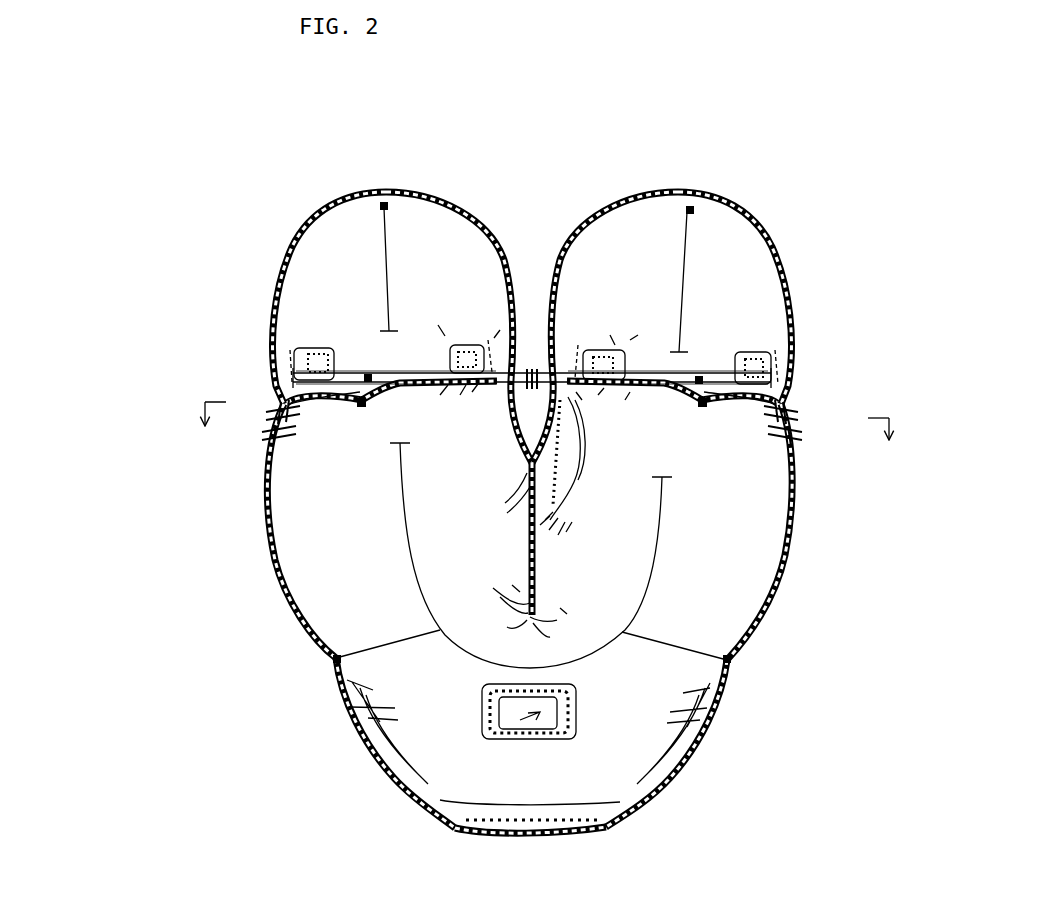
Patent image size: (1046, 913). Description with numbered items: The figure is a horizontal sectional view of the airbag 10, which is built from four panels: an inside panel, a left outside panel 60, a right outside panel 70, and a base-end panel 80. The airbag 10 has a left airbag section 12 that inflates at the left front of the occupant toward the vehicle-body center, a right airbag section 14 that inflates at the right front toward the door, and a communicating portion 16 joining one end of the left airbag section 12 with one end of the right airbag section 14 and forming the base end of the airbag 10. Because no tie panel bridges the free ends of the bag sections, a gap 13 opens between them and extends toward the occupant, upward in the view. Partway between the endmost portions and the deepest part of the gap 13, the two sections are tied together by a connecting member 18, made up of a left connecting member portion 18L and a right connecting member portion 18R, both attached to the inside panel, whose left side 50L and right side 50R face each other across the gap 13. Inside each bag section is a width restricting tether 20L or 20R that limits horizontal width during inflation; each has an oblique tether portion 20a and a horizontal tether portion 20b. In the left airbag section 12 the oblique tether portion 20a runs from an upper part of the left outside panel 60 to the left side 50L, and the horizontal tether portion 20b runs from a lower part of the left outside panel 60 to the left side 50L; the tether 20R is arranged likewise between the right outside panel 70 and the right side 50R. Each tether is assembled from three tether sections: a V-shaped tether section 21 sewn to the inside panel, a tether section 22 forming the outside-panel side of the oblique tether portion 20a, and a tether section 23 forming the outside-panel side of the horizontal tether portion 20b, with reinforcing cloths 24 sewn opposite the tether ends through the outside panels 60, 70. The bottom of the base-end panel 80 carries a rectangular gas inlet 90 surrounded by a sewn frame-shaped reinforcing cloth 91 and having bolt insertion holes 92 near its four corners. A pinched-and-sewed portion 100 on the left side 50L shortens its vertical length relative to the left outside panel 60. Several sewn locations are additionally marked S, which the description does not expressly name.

The airbag 10 is at (766, 152).
The left airbag section 12 is at (824, 247).
The gap 13 is at (570, 205).
The right airbag section 14 is at (258, 237).
The communicating portion 16 is at (392, 792).
The connecting member 18 is at (530, 366).
The right connecting member portion 18R is at (490, 343).
The left connecting member portion 18L is at (578, 346).
The width restricting tether 20R is at (446, 420).
The width restricting tether 20L is at (660, 422).
The oblique tether portion 20a is at (368, 414).
The horizontal tether portion 20b is at (361, 366).
The tether section 21 is at (432, 358).
The tether section 22 is at (318, 414).
The tether section 23 is at (325, 352).
The reinforcing cloth 24 is at (272, 430).
The right side of inside panel 50R is at (470, 207).
The left side of inside panel 50L is at (657, 202).
The left outside panel 60 is at (788, 550).
The right outside panel 70 is at (272, 550).
The base-end panel 80 is at (702, 740).
The gas inlet 90 is at (536, 732).
The frame-shaped reinforcing cloth 91 is at (578, 716).
The bolt insertion holes 92 is at (482, 686).
The pinched-and-sewed portion 100 is at (582, 462).
The sewn portion S is at (390, 206).